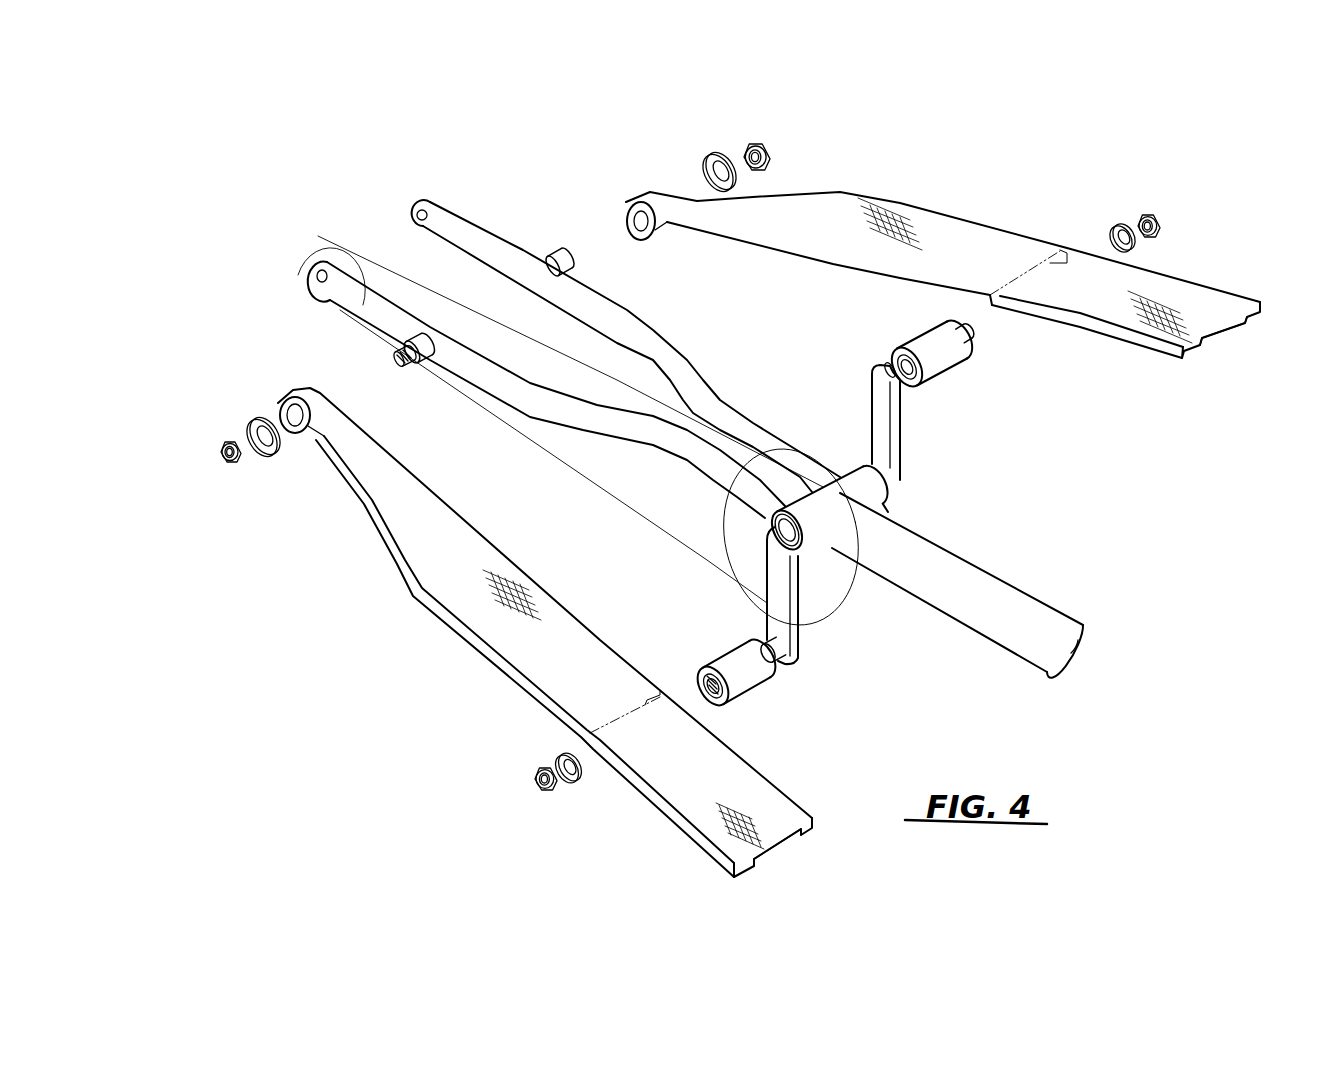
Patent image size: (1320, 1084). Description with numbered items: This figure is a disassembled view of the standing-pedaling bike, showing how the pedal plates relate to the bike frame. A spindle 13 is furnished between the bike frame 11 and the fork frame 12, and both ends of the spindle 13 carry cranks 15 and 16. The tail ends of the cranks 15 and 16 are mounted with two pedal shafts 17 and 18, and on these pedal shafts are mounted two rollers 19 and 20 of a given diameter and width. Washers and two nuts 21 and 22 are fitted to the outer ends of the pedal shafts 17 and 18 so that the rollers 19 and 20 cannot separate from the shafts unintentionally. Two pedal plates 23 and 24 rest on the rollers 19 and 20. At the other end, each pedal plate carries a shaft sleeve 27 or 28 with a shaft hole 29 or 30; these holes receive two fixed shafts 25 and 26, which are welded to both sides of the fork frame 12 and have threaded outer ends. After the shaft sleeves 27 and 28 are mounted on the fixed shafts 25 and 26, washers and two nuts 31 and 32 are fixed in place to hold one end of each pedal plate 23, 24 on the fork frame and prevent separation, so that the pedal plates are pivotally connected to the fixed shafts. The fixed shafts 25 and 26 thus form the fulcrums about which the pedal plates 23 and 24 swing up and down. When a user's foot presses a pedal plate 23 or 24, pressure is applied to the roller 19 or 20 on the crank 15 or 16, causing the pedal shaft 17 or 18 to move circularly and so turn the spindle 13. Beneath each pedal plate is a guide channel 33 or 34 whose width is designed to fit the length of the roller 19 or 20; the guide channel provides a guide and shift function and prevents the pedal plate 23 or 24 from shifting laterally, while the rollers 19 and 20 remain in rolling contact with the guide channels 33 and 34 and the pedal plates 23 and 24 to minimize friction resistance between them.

The bike frame 11 is at (1058, 570).
The fork frame 12 is at (483, 243).
The spindle 13 is at (887, 498).
The crank 15 is at (782, 615).
The crank 16 is at (890, 430).
The pedal shaft 17 is at (785, 663).
The pedal shaft 18 is at (927, 390).
The roller 19 is at (747, 677).
The roller 20 is at (947, 348).
The nut 21 is at (540, 792).
The nut 22 is at (1162, 220).
The pedal plate 23 is at (577, 657).
The pedal plate 24 is at (1080, 283).
The fixed shaft 25 is at (423, 365).
The fixed shaft 26 is at (557, 258).
The shaft sleeve 27 is at (313, 432).
The shaft sleeve 28 is at (663, 230).
The shaft hole 29 is at (293, 425).
The shaft hole 30 is at (645, 233).
The nut 31 is at (227, 465).
The nut 32 is at (765, 146).
The guide channel 33 is at (773, 862).
The guide channel 34 is at (1223, 332).